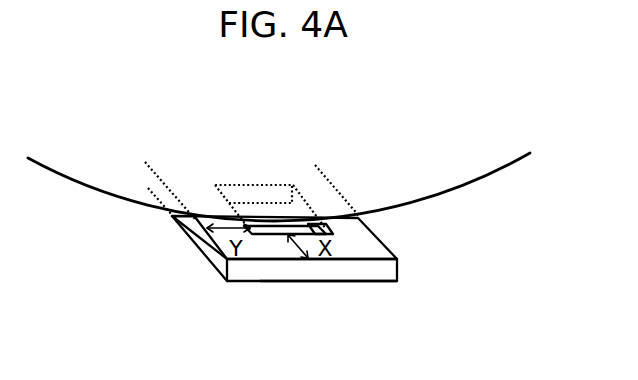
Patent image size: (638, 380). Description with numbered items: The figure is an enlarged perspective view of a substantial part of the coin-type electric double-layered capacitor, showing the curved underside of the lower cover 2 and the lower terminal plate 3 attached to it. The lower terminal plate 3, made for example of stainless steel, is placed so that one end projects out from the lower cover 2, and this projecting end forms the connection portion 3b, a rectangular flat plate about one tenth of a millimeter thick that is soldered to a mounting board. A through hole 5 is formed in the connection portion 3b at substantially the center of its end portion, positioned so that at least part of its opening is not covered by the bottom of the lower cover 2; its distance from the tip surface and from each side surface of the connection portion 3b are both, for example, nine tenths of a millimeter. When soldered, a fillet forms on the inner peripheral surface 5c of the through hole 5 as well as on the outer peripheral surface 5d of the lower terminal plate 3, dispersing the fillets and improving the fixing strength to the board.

The lower cover 2 is at (397, 175).
The lower terminal plate 3 is at (380, 233).
The connection portion 3b is at (397, 271).
The through hole 5 is at (280, 228).
The inner peripheral surface 5c is at (308, 228).
The outer peripheral surface 5d is at (325, 267).